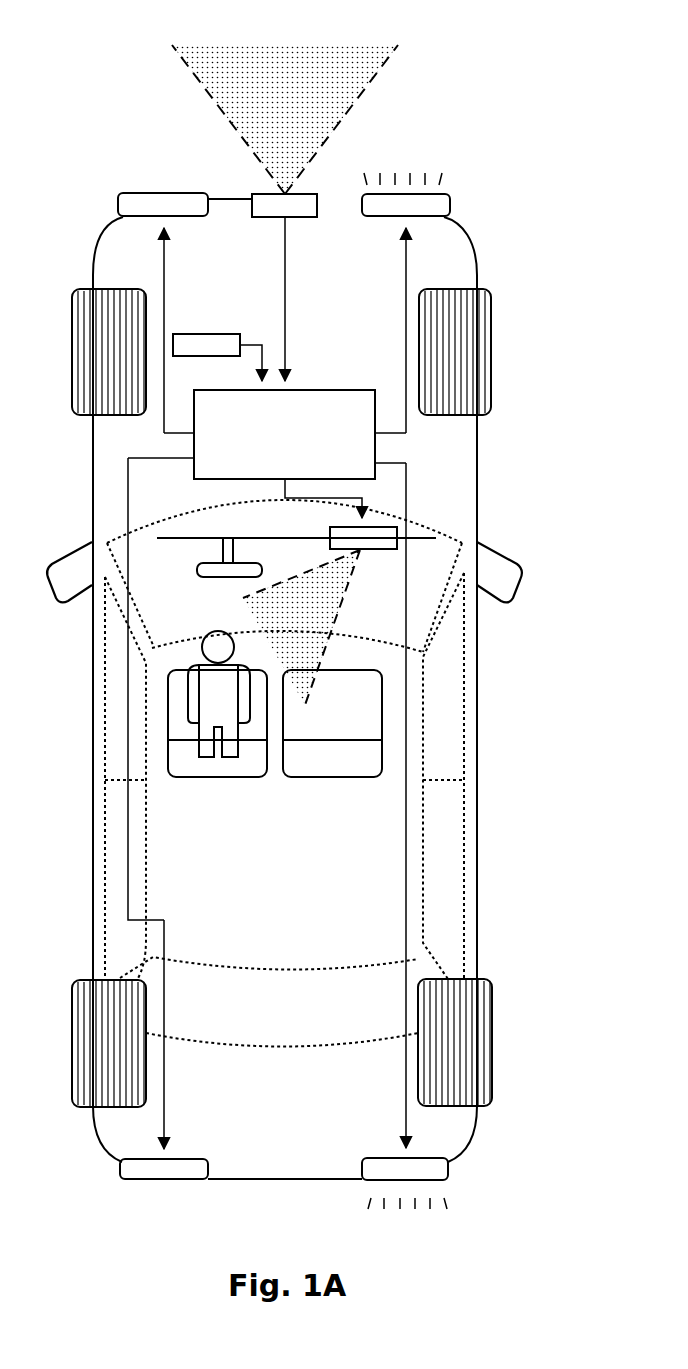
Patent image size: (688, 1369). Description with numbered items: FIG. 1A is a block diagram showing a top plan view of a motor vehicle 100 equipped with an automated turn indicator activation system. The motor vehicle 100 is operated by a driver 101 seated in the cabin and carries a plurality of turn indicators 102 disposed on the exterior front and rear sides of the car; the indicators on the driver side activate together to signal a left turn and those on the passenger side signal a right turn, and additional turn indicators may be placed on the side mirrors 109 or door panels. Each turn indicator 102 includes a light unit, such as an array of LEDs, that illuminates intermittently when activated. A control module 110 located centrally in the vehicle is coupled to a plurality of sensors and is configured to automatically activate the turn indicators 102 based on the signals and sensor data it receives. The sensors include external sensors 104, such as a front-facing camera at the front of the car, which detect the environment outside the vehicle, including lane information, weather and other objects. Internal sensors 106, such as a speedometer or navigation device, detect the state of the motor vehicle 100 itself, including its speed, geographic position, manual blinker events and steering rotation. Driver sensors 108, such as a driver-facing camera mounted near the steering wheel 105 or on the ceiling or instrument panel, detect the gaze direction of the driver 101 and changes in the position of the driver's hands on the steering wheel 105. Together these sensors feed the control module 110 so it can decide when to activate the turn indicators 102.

The motor vehicle 100 is at (133, 115).
The driver 101 is at (146, 688).
The turn indicators 102 is at (127, 201).
The external sensors 104 is at (318, 217).
The steering wheel 105 is at (195, 572).
The internal sensors 106 is at (208, 334).
The driver sensors 108 is at (398, 528).
The side mirrors 109 is at (503, 545).
The control module 110 is at (268, 459).